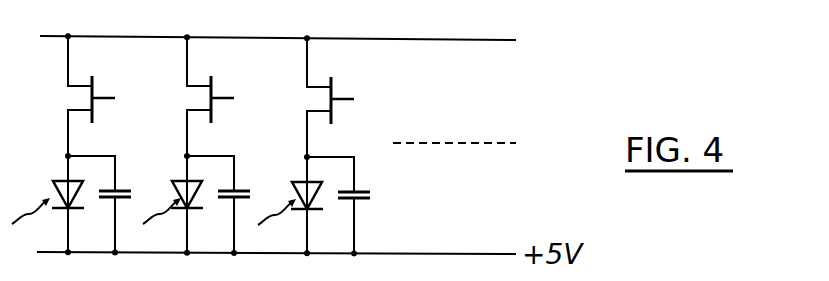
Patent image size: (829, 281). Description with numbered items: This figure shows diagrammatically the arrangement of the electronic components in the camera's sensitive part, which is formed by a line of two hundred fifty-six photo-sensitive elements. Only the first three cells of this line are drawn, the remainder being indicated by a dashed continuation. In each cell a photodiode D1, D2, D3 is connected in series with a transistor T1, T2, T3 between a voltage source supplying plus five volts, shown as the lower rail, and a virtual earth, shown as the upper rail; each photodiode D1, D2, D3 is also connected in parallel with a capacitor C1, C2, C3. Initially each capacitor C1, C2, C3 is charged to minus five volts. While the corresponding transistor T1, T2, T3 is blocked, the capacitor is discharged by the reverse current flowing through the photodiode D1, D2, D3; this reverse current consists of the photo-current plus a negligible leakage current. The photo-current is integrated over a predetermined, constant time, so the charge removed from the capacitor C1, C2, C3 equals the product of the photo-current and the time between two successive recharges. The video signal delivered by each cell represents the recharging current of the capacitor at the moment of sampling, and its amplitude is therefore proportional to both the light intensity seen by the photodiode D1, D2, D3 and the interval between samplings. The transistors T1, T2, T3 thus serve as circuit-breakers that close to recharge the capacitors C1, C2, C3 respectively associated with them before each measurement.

The transistor T1 is at (96, 94).
The transistor T2 is at (221, 95).
The transistor T3 is at (336, 96).
The photodiode D1 is at (48, 202).
The photodiode D2 is at (173, 204).
The photodiode D3 is at (290, 205).
The capacitor C1 is at (99, 205).
The capacitor C2 is at (218, 206).
The capacitor C3 is at (347, 206).